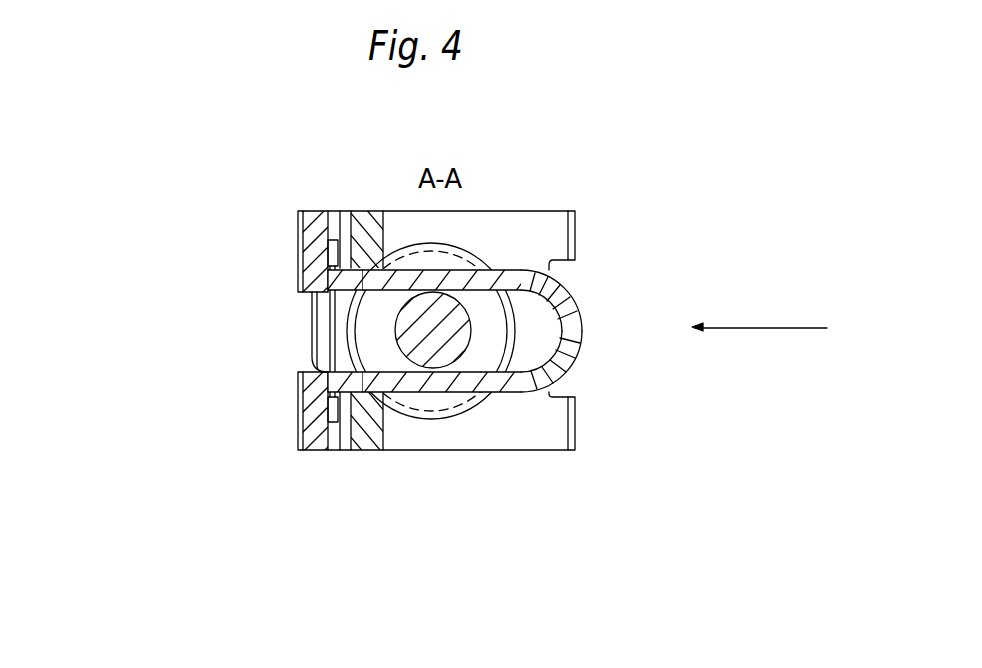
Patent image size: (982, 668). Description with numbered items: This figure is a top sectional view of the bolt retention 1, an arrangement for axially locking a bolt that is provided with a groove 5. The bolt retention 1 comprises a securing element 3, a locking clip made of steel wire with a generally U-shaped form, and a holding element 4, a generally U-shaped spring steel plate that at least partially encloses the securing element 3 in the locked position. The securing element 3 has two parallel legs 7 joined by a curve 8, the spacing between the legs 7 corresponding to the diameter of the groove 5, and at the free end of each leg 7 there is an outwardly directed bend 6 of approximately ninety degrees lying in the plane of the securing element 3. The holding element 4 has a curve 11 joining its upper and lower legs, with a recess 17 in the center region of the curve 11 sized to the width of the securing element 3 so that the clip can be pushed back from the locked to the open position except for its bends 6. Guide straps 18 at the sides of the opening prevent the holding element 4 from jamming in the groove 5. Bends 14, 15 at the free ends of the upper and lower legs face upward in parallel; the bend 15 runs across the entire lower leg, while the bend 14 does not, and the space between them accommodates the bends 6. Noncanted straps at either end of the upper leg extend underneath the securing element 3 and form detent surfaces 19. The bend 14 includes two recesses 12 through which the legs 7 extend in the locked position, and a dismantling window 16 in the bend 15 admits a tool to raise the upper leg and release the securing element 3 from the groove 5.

The bolt retention 1 is at (550, 155).
The securing element 3 is at (495, 400).
The holding element 4 is at (547, 237).
The groove 5 is at (455, 245).
The bend 6 is at (316, 214).
The leg 7 is at (516, 385).
The curve 8 is at (583, 316).
The curve 11 is at (582, 245).
The recess 12 is at (328, 283).
The bend 14 is at (315, 353).
The bend 15 is at (292, 232).
The dismantling window 16 is at (303, 334).
The recess 17 is at (587, 350).
The guide strap 18 is at (537, 383).
The detent surface 19 is at (318, 212).